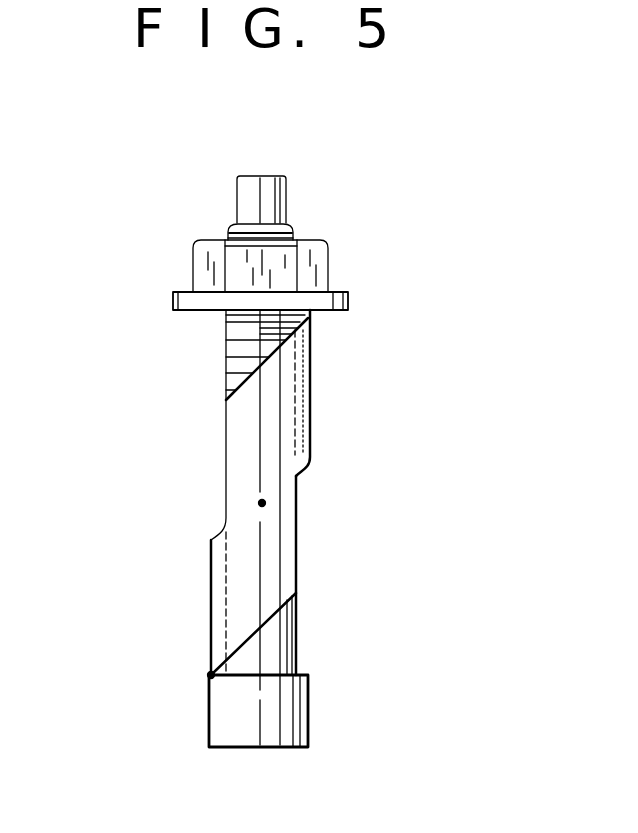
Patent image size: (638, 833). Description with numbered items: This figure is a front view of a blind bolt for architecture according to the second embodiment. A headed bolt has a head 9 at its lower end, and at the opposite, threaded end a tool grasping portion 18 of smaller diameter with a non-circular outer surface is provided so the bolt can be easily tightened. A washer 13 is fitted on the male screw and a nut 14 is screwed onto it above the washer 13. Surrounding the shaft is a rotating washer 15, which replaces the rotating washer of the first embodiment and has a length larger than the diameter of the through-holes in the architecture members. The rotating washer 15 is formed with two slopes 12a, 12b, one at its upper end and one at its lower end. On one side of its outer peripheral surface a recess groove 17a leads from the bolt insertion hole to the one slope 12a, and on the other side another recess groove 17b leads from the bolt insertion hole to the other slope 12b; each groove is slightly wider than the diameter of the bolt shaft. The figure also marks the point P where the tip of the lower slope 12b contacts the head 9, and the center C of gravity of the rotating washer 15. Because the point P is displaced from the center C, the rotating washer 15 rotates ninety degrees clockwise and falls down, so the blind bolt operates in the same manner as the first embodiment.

The tool grasping portion 18 is at (248, 198).
The nut 14 is at (310, 266).
The washer 13 is at (338, 312).
The slope 12a is at (257, 362).
The slope 12b is at (257, 633).
The rotating washer 15 is at (260, 443).
The recess groove 17a is at (226, 477).
The recess groove 17b is at (296, 555).
The head 9 is at (287, 713).
The center of gravity C is at (262, 503).
The point P is at (211, 675).